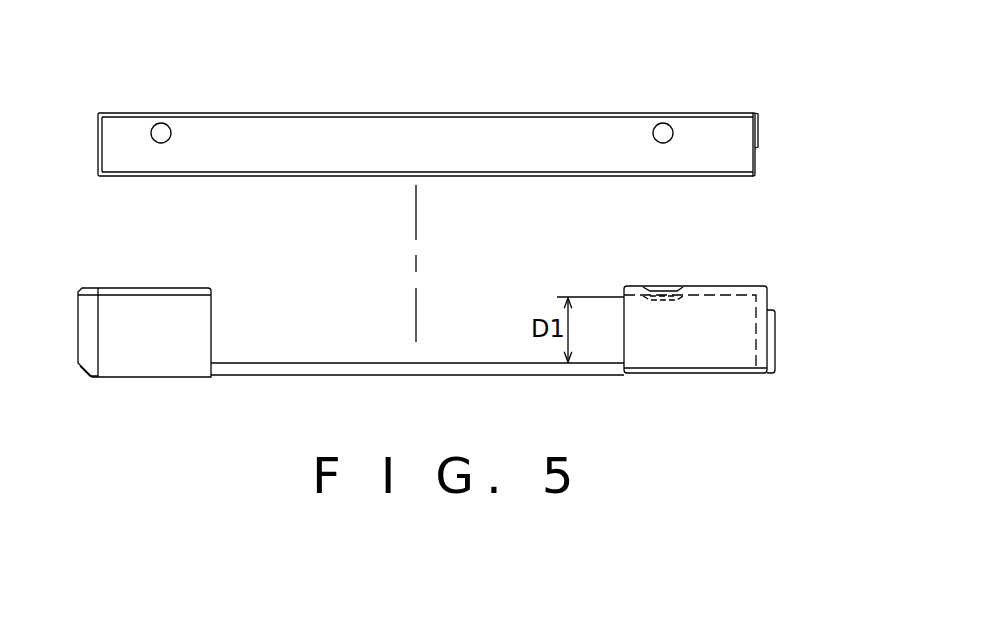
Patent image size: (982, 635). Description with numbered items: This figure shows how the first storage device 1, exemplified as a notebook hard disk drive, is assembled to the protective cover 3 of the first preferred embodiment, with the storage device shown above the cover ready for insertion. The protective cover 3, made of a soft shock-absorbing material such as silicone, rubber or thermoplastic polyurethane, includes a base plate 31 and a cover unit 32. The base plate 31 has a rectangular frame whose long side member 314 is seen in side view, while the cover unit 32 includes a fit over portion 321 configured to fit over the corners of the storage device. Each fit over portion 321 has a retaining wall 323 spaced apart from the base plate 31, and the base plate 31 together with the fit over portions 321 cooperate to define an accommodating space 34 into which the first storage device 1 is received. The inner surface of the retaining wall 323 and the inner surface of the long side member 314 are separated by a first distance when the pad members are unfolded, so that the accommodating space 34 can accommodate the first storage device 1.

The first storage device 1 is at (613, 100).
The protective cover 3 is at (452, 305).
The base plate 31 is at (457, 368).
The long side member 314 is at (363, 368).
The cover unit 32 is at (640, 280).
The fit over portion 321 is at (695, 273).
The retaining wall 323 is at (708, 287).
The accommodating space 34 is at (467, 318).